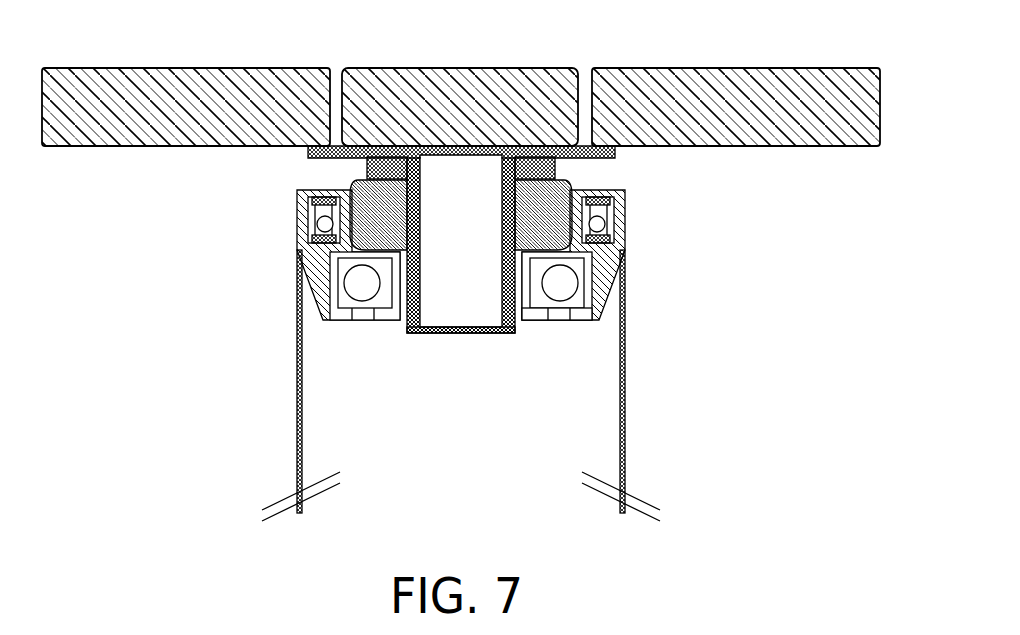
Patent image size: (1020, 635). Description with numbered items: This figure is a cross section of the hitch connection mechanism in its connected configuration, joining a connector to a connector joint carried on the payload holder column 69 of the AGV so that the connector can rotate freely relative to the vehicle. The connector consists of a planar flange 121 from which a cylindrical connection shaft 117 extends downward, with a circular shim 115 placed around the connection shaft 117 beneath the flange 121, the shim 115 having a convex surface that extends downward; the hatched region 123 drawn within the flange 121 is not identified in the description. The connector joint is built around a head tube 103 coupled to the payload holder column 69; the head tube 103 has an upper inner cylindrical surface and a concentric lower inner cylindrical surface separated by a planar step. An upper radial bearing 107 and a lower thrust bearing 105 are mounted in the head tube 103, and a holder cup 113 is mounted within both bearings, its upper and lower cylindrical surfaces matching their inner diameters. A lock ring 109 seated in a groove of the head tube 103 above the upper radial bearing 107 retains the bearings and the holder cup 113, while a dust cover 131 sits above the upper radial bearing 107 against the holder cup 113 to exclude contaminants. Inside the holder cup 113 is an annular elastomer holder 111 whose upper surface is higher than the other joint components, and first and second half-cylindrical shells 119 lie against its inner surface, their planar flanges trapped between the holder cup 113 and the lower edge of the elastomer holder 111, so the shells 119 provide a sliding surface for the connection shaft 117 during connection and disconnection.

The payload holder column 69 is at (320, 448).
The head tube 103 is at (628, 238).
The lower thrust bearing 105 is at (603, 293).
The upper radial bearing 107 is at (297, 220).
The lock ring 109 is at (627, 194).
The annular elastomer holder 111 is at (421, 230).
The holder cup 113 is at (330, 292).
The shim 115 is at (555, 168).
The connection shaft 117 is at (518, 326).
The shell 119 is at (423, 300).
The flange 121 is at (368, 121).
The hatched region of rotor block 123 is at (470, 104).
The dust cover 131 is at (362, 180).